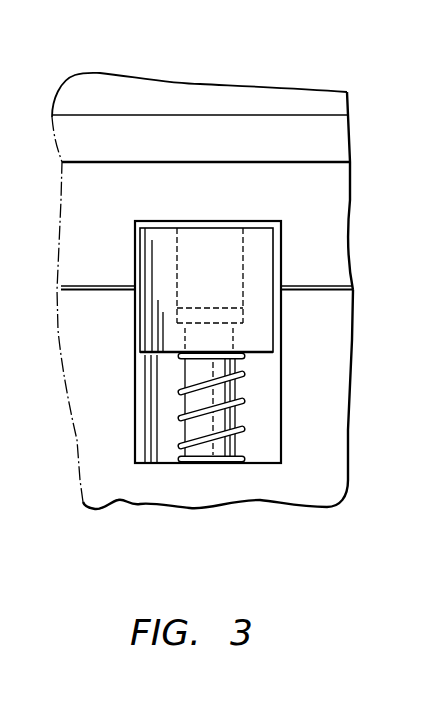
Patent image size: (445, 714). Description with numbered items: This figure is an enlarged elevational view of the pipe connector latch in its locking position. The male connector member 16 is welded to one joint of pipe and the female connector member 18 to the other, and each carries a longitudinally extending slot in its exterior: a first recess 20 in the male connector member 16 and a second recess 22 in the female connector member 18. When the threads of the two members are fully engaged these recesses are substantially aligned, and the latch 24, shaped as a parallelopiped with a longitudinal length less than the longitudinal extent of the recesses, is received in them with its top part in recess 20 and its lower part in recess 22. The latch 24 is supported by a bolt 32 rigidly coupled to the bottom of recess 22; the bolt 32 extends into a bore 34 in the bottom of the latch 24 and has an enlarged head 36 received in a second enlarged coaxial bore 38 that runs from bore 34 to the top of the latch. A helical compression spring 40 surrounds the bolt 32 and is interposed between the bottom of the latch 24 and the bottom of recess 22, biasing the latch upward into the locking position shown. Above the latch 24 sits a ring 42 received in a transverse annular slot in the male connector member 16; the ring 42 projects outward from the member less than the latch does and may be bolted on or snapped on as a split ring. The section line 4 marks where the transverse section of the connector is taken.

The section line 4- 4 is at (178, 45).
The male connector member 16 is at (359, 194).
The female connector member 18 is at (360, 324).
The ring 42 is at (316, 125).
The first recess 20 is at (273, 258).
The second recess 22 is at (276, 449).
The latch 24 is at (156, 256).
The bolt 32 is at (232, 382).
The bore 34 is at (230, 340).
The enlarged head 36 is at (176, 322).
The second enlarged coaxial bore 38 is at (245, 296).
The helical compression spring 40 is at (186, 418).